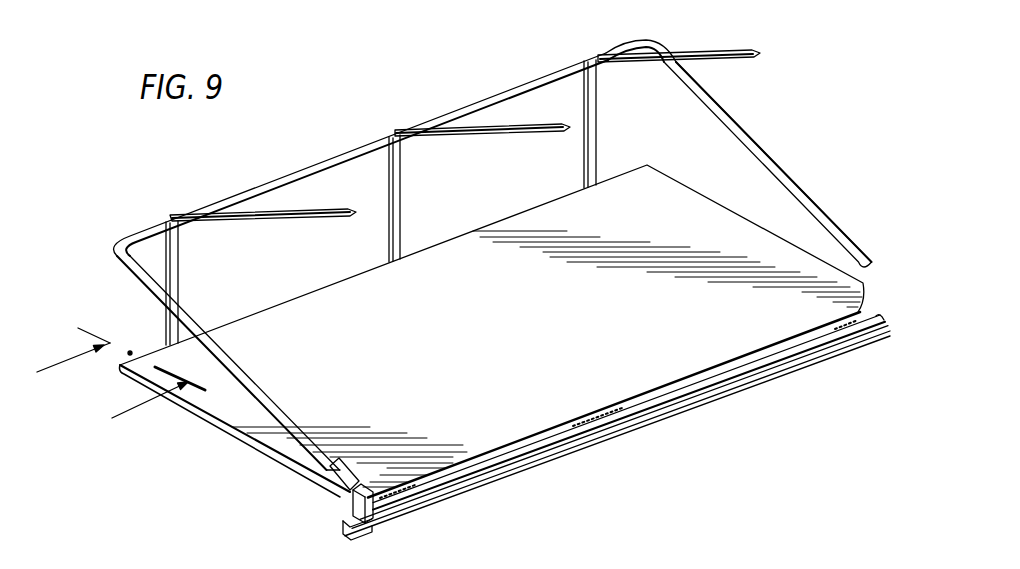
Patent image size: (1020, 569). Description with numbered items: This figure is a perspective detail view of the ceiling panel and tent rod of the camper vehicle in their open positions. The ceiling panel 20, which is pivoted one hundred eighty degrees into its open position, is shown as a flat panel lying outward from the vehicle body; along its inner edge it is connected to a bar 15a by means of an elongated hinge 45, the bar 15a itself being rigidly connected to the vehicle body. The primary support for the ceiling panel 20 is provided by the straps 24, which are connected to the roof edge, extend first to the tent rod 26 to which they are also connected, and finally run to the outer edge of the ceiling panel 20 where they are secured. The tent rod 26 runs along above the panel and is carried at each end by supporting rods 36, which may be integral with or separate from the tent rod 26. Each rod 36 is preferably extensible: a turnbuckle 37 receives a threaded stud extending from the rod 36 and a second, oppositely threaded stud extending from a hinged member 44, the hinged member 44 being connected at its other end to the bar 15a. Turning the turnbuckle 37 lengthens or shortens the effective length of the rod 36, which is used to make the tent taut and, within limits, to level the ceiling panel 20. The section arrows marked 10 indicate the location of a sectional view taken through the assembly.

The cover assembly 10 is at (120, 373).
The bar 15a is at (395, 516).
The ceiling panel 20 is at (458, 384).
The straps 24 is at (324, 211).
The tent rod 26 is at (350, 152).
The rods 36 is at (280, 372).
The turnbuckle 37 is at (354, 459).
The hinged member 44 is at (357, 501).
The elongated hinge 45 is at (520, 462).